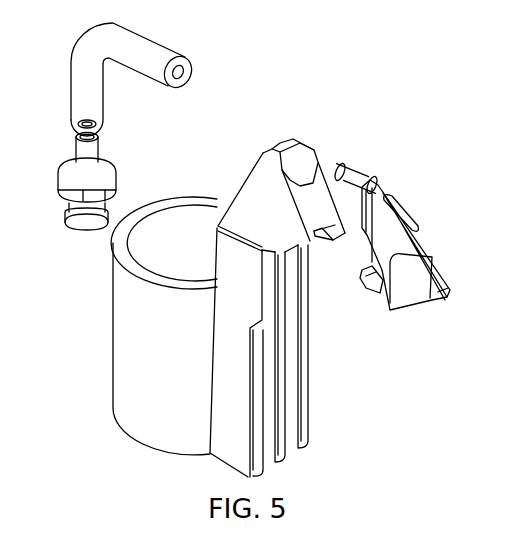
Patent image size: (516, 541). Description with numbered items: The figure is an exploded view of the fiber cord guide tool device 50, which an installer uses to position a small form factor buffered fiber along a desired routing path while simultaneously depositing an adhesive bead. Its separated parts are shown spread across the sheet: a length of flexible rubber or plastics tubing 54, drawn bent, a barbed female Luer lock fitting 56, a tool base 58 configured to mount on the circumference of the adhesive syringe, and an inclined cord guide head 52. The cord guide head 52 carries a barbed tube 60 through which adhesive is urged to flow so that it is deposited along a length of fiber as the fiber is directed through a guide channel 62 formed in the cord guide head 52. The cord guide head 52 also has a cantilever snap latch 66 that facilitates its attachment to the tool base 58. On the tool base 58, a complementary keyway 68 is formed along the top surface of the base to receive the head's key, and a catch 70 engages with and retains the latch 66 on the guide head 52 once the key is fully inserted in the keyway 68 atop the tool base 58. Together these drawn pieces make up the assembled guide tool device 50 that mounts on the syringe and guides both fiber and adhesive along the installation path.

The fiber cord guide tool device 50 is at (423, 133).
The cord guide head 52 is at (418, 233).
The flexible tubing 54 is at (153, 38).
The barbed female Luer lock fitting 56 is at (60, 183).
The tool base 58 is at (113, 348).
The barbed tube 60 is at (368, 167).
The guide channel 62 is at (438, 297).
The cantilever snap latch 66 is at (372, 295).
The keyway 68 is at (283, 145).
The catch 70 is at (318, 236).